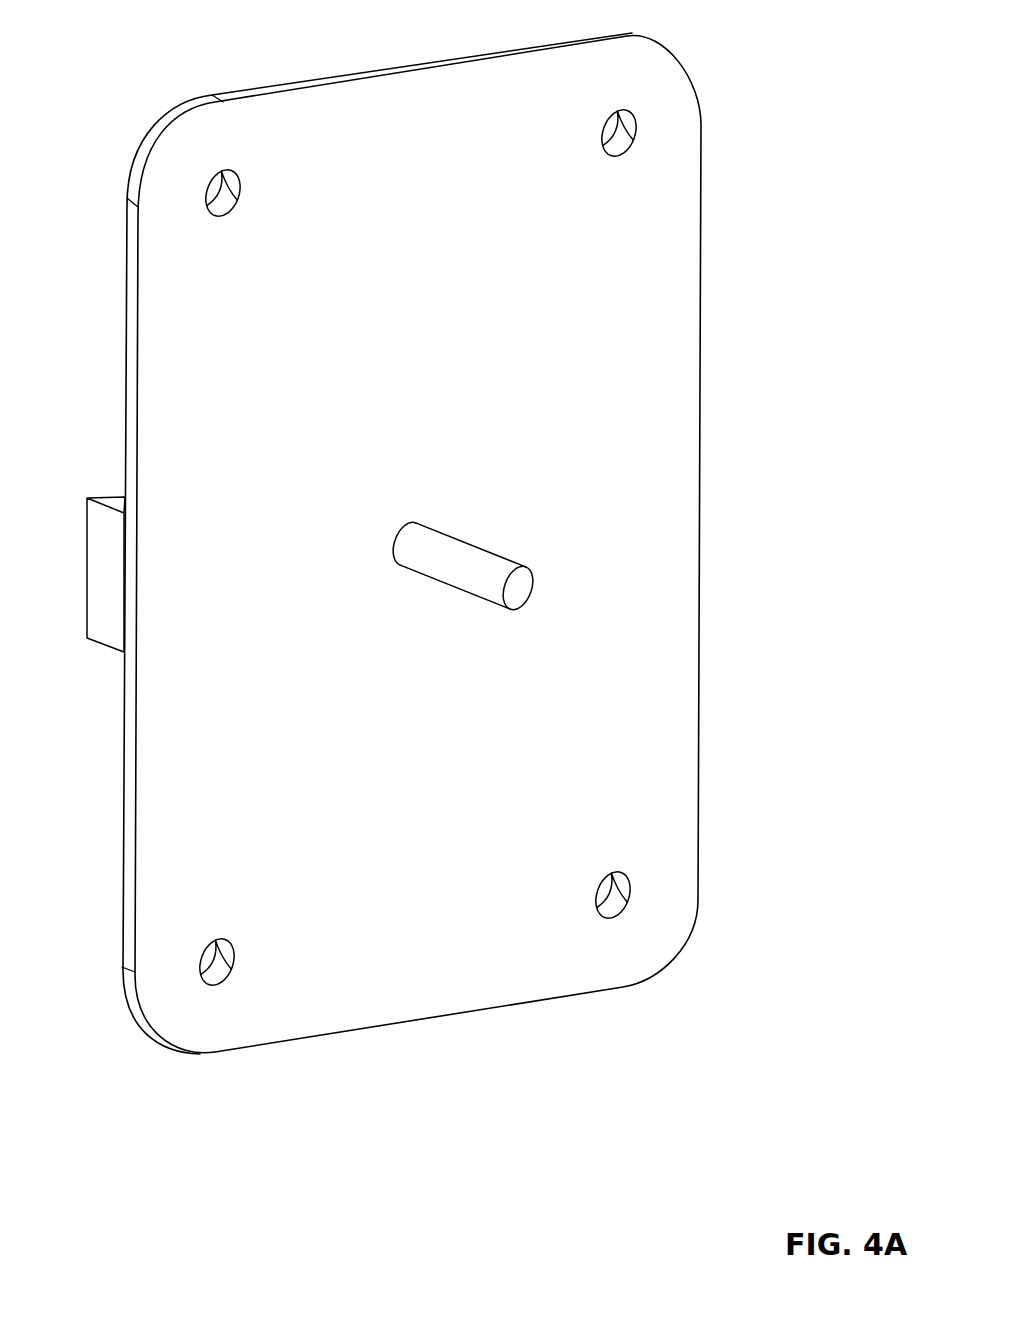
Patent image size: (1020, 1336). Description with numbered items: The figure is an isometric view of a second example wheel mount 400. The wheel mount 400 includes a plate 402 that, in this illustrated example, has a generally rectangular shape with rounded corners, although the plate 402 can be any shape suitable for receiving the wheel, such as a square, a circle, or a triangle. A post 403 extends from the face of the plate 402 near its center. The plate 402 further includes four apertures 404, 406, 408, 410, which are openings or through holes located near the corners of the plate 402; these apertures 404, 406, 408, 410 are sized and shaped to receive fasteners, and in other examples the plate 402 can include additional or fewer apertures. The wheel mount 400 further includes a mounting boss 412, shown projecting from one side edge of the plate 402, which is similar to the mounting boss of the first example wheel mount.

The wheel mount 400 is at (237, 52).
The plate 402 is at (703, 152).
The post 403 is at (505, 555).
The aperture 404 is at (229, 171).
The aperture 406 is at (621, 110).
The aperture 408 is at (618, 874).
The aperture 410 is at (222, 940).
The mounting boss 412 is at (123, 497).